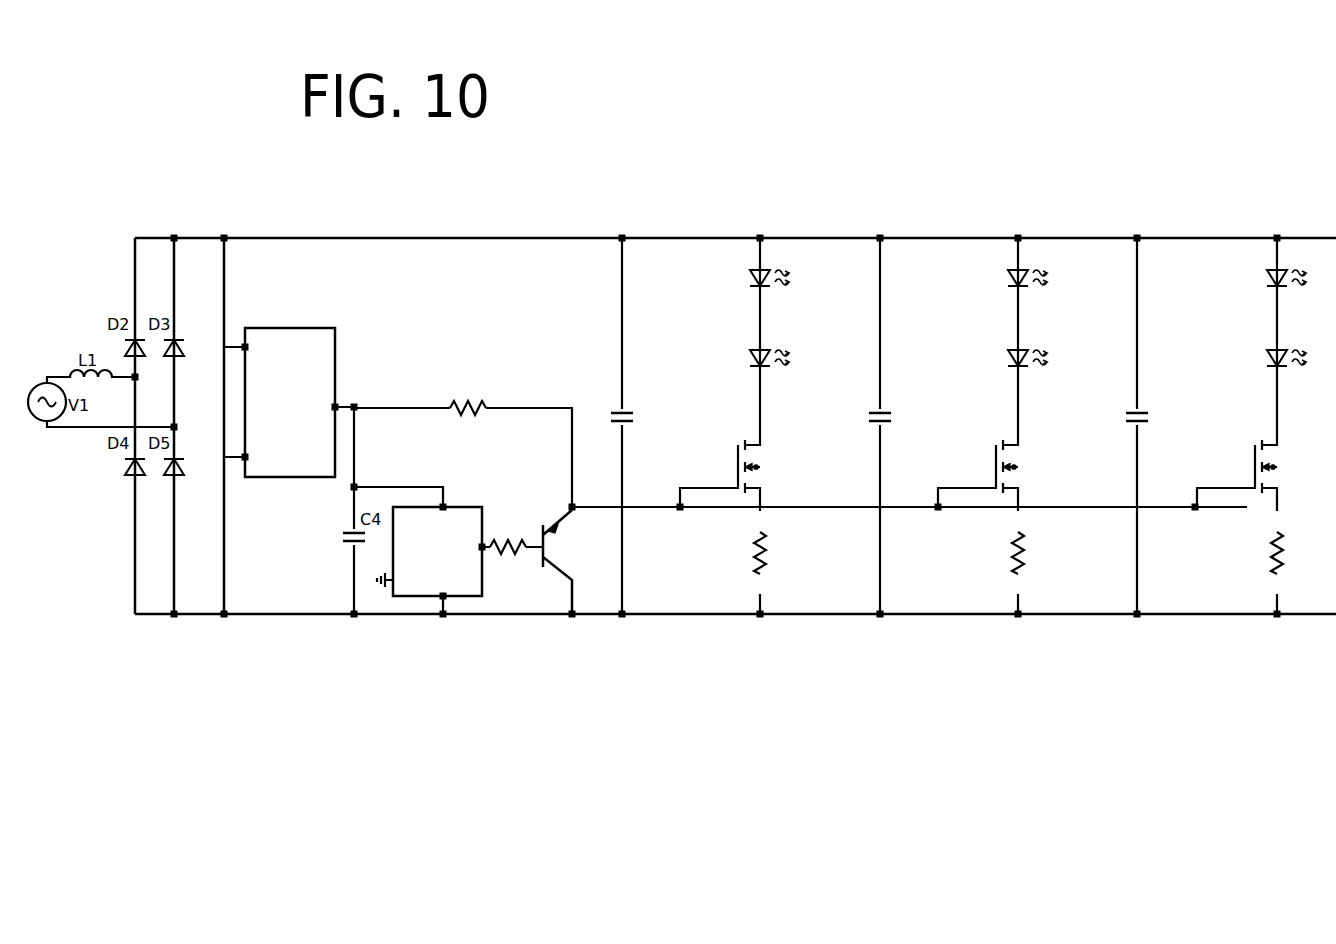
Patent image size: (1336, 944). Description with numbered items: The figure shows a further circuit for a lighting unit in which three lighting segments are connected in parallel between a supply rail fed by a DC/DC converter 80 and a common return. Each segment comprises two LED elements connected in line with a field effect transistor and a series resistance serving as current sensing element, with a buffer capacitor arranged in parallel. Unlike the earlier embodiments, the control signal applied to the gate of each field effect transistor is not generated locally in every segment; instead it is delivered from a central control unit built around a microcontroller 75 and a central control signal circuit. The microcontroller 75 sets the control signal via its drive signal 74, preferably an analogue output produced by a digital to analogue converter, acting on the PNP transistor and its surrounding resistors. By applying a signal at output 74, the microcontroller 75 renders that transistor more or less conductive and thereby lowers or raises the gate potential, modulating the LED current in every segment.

The DC/DC converter 80 is at (277, 459).
The microcontroller 75 is at (427, 544).
The drive signal 74 is at (485, 545).